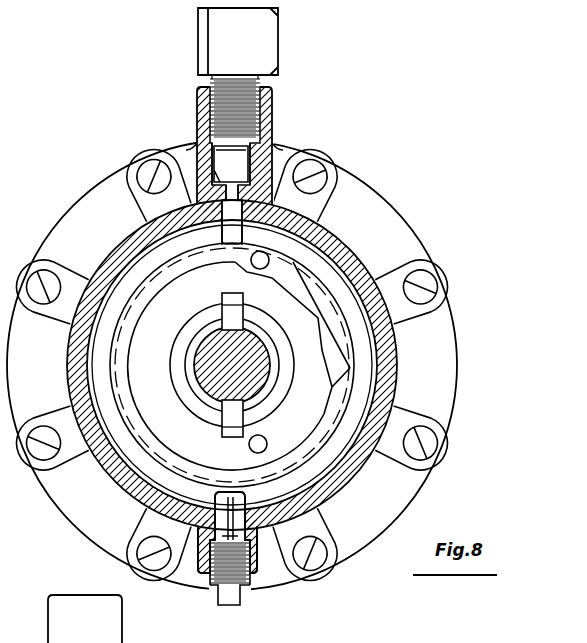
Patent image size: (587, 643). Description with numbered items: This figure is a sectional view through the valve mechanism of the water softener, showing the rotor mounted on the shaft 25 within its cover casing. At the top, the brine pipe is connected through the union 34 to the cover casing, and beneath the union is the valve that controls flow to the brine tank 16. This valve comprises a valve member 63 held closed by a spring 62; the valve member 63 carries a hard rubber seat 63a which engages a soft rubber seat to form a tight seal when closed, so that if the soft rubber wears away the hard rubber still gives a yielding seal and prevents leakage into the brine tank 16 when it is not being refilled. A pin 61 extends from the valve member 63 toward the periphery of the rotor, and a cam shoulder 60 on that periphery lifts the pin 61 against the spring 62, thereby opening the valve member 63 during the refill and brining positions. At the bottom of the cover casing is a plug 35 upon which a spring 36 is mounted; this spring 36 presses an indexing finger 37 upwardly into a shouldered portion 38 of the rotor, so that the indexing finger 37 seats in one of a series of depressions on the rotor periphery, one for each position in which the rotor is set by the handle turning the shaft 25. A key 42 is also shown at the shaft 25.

The union 34 is at (278, 47).
The spring 62 is at (260, 142).
The hard rubber seat 63a is at (204, 145).
The valve member 63 is at (244, 163).
The pin 61 is at (240, 230).
The cam shoulder 60 is at (244, 246).
The shaft 25 is at (206, 368).
The brine tank 16 is at (277, 388).
The key 42 is at (221, 414).
The shouldered portion 38 is at (246, 491).
The indexing finger 37 is at (222, 518).
The plug 35 is at (251, 578).
The spring 36 is at (262, 552).